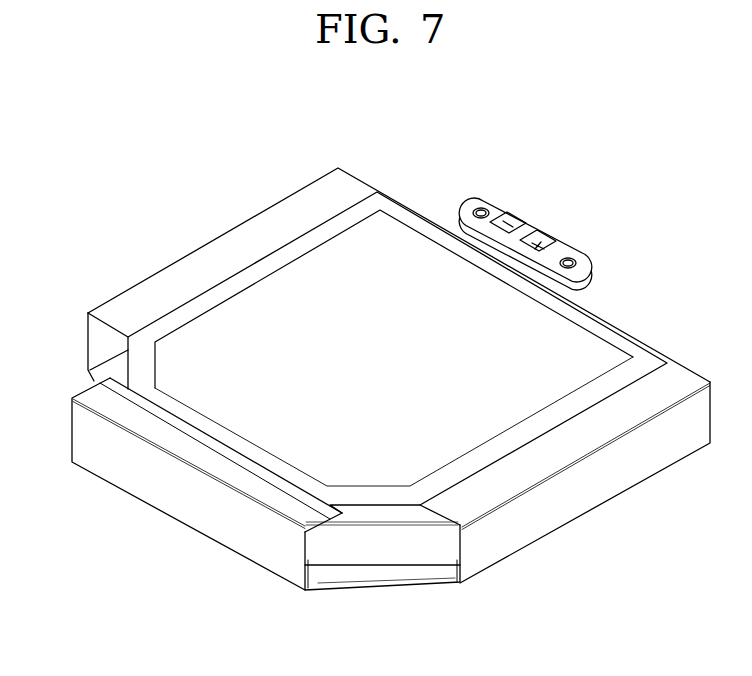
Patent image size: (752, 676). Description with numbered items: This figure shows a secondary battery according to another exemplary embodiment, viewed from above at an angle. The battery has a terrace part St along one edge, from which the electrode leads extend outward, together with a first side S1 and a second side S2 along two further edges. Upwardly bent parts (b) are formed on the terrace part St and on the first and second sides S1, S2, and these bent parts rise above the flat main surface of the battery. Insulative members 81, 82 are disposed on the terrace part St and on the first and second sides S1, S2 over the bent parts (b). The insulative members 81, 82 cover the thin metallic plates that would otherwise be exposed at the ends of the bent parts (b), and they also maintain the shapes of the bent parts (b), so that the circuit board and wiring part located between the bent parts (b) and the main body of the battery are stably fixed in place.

The insulative member 81 is at (207, 497).
The insulative member 82 is at (406, 374).
The bent part b is at (98, 340).
The first side S1 is at (591, 528).
The second side S2 is at (203, 232).
The terrace part St is at (161, 533).